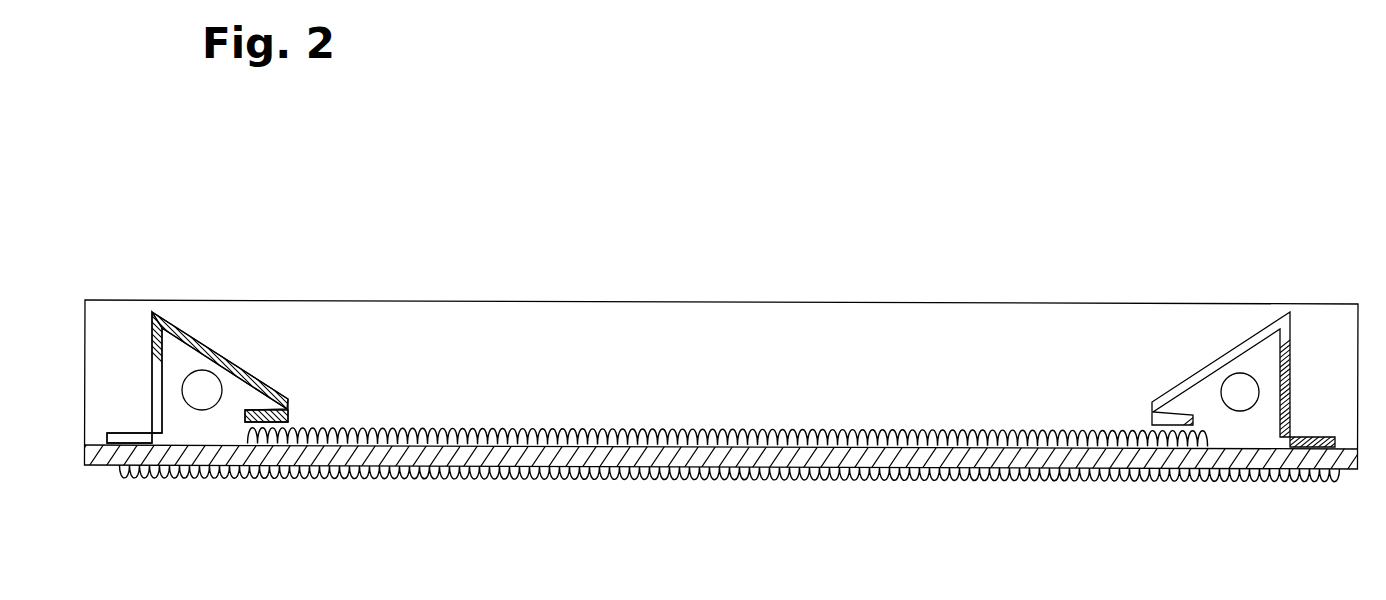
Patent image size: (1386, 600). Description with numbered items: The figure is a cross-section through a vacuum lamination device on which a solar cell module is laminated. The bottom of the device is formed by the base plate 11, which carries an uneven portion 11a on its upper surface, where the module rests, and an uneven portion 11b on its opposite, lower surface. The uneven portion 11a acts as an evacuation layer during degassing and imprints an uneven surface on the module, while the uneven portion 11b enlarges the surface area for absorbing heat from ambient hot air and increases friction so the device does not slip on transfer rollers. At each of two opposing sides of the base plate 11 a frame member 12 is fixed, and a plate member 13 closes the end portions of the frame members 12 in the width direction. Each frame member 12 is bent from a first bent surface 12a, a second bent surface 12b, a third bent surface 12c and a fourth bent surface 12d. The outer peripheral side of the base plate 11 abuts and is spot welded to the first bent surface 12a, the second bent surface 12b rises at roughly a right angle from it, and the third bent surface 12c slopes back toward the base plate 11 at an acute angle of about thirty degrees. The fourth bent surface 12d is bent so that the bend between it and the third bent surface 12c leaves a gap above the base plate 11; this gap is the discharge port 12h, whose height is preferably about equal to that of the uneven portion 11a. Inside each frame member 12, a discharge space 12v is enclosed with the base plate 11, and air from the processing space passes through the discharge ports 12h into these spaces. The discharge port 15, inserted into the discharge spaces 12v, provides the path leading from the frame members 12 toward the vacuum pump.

The base plate 11 is at (729, 418).
The uneven portion 11a is at (578, 443).
The uneven portion 11b is at (634, 479).
The frame member 12 is at (85, 218).
The first bent surface 12a is at (132, 433).
The second bent surface 12b is at (152, 423).
The third bent surface 12c is at (224, 357).
The fourth bent surface 12d is at (272, 410).
The discharge port 12h is at (297, 427).
The discharge space 12v is at (176, 428).
The plate member 13 is at (891, 318).
The discharge port 15 is at (202, 390).